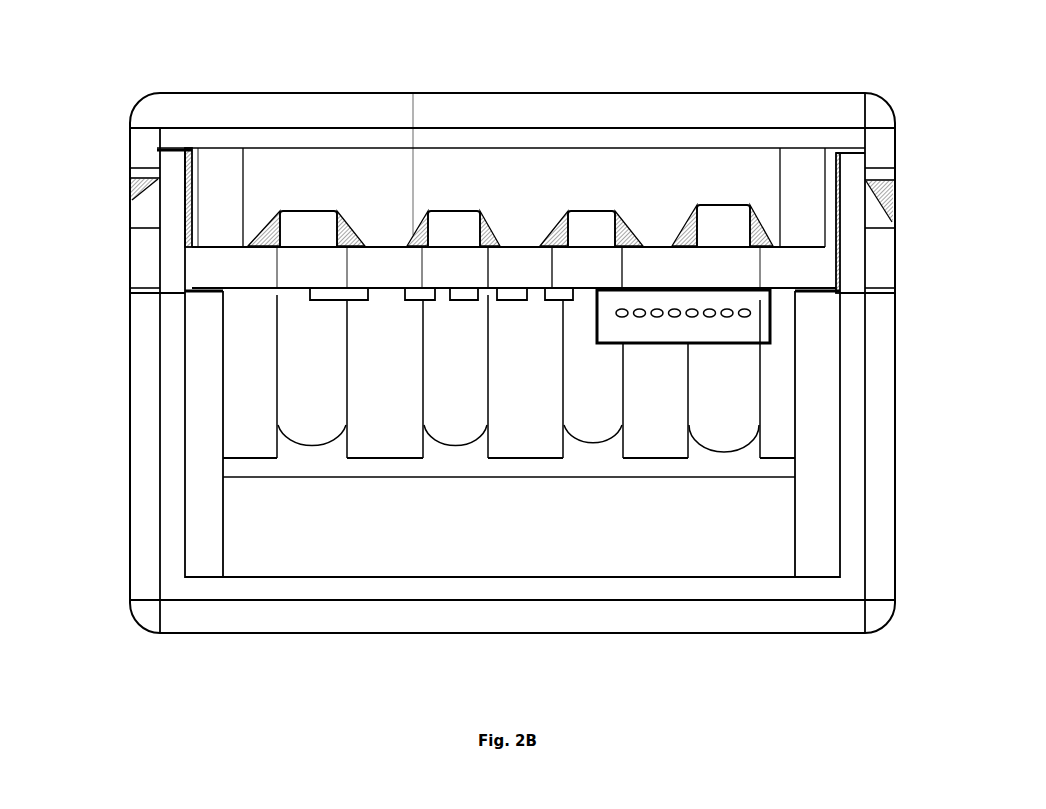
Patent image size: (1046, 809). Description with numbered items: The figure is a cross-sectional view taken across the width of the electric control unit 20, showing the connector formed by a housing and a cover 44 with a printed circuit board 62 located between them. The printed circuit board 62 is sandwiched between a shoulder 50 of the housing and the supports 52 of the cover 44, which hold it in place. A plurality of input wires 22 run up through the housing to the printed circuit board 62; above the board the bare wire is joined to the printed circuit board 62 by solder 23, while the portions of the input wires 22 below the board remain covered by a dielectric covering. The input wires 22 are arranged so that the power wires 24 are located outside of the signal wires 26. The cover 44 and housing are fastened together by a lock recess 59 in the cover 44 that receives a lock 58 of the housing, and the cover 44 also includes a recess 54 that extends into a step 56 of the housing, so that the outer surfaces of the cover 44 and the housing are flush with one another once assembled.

The electric control unit 20 is at (842, 70).
The input wires 22 is at (271, 366).
The solder 23 is at (353, 238).
The power wires 24 is at (305, 233).
The signal wires 26 is at (600, 235).
The cover 44 is at (288, 131).
The shoulder 50 is at (832, 297).
The supports 52 is at (850, 230).
The recess 54 is at (152, 273).
The step 56 is at (852, 255).
The lock 58 is at (878, 212).
The lock recess 59 is at (907, 194).
The printed circuit board 62 is at (210, 267).